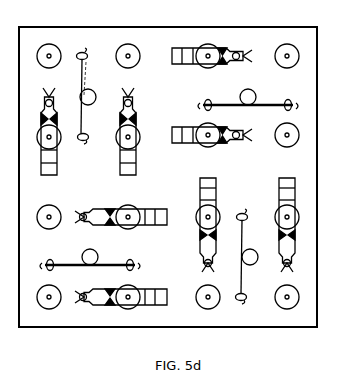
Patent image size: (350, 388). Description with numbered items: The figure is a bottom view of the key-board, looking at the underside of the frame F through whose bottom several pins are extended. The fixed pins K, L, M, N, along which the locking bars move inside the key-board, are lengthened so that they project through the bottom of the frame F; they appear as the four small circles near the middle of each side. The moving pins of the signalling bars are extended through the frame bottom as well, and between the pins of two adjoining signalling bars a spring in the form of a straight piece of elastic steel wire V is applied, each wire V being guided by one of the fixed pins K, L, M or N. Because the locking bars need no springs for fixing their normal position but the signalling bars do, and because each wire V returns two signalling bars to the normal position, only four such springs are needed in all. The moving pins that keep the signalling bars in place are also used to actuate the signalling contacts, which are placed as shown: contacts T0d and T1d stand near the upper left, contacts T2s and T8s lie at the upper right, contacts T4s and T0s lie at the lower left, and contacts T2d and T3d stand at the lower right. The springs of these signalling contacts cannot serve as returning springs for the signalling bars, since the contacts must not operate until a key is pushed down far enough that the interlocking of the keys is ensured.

The signalling contact T0d is at (40, 131).
The signalling contact T1d is at (133, 131).
The signalling contact T2s is at (212, 50).
The signalling contact T8s is at (212, 146).
The signalling contact T4s is at (121, 208).
The signalling contact T0s is at (121, 305).
The signalling contact T2d is at (199, 225).
The signalling contact T3d is at (293, 225).
The fixed pin M is at (90, 96).
The fixed pin L is at (249, 257).
The fixed pin N is at (248, 91).
The fixed pin K is at (90, 251).
The elastic steel wire V is at (166, 168).
The frame F is at (310, 36).